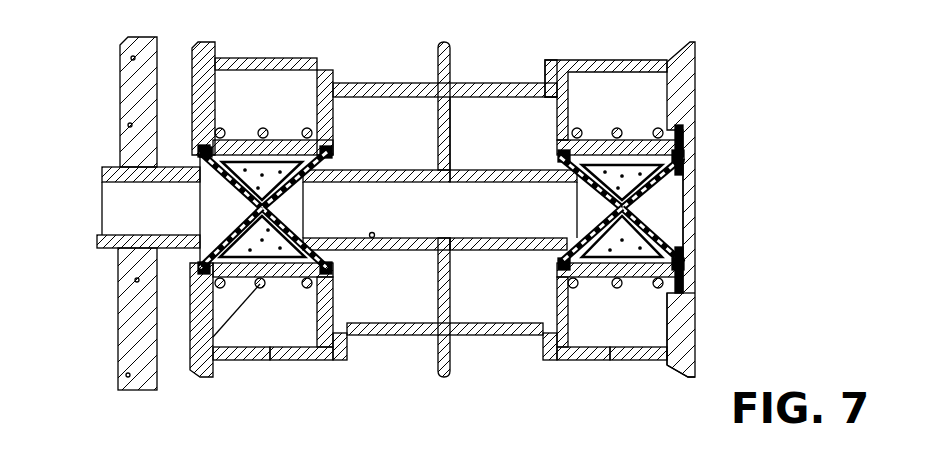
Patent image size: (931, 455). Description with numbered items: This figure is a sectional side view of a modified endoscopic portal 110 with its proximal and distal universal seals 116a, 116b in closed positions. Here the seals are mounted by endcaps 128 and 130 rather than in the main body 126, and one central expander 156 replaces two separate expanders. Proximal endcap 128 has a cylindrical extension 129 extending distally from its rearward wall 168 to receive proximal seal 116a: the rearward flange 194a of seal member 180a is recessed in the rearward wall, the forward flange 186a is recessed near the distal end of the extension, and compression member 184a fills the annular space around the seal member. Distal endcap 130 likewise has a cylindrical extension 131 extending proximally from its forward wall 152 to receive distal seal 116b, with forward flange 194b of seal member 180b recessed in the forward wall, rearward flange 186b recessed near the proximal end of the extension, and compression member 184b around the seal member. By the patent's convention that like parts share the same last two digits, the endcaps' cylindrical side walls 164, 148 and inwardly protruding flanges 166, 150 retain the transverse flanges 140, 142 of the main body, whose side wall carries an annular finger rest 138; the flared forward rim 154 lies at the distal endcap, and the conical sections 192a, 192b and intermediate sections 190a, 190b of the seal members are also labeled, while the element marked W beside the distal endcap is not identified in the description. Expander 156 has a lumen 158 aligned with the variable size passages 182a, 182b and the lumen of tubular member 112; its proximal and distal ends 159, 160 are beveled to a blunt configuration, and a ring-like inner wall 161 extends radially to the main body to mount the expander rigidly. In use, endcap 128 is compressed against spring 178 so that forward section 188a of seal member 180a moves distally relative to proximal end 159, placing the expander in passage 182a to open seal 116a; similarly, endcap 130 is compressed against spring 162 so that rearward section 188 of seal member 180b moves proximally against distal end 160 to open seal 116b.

The wall W is at (120, 68).
The endoscopic portal 110 is at (737, 88).
The tubular member 112 is at (100, 172).
The proximal universal seal 116a is at (667, 206).
The distal universal seal 116b is at (220, 218).
The main body 126 is at (360, 82).
The endcap 128 is at (690, 37).
The cylindrical extension 129 is at (595, 133).
The endcap 130 is at (193, 37).
The cylindrical extension 131 is at (245, 133).
The vertical post 138 is at (443, 40).
The lower right bracket bottom plate 140 is at (560, 357).
The lower left bracket flange 142 is at (323, 357).
The lower left bracket bottom plate 148 is at (247, 360).
The foot 150 is at (350, 337).
The forward wall 152 is at (213, 337).
The lower left bracket side flange 154 is at (193, 373).
The expander 156 is at (497, 167).
The lumen 158 is at (433, 238).
The proximal end 159 is at (585, 196).
The distal end 160 is at (296, 218).
The inner wall 161 is at (450, 133).
The spring 162 is at (213, 335).
The lower right bracket bottom plate end 164 is at (645, 360).
The lower right bracket lip 166 is at (543, 337).
The rearward wall 168 is at (693, 342).
The spring 178 is at (692, 355).
The seal member 180a is at (603, 215).
The seal member 180b is at (300, 233).
The variable size passage 182a is at (683, 175).
The variable size passage 182b is at (303, 195).
The compression member 184a is at (660, 165).
The compression member 184b is at (288, 147).
The forward flange 186a is at (567, 282).
The rearward flange 186b is at (340, 327).
The web rod 188 is at (372, 233).
The forward section 188a is at (577, 240).
The first seal anchor 190a is at (681, 278).
The second seal anchor 190b is at (205, 160).
The first seal upper leg 192a is at (650, 147).
The second seal upper leg 192b is at (225, 187).
The rearward flange 194a is at (692, 305).
The forward flange 194b is at (205, 268).